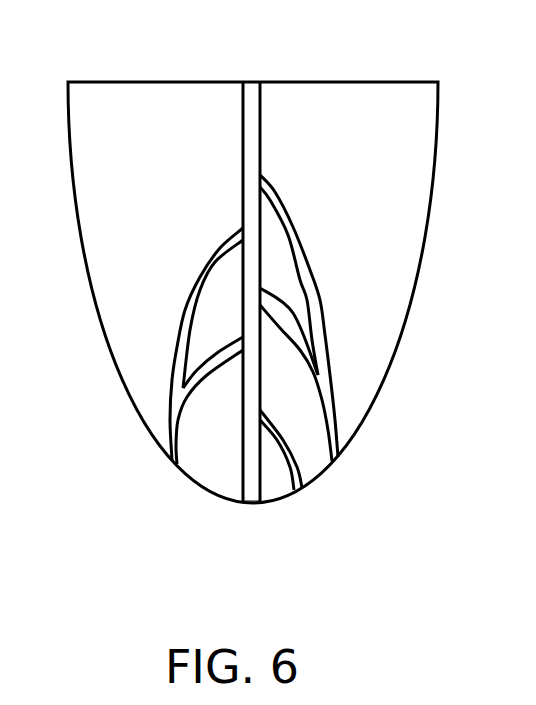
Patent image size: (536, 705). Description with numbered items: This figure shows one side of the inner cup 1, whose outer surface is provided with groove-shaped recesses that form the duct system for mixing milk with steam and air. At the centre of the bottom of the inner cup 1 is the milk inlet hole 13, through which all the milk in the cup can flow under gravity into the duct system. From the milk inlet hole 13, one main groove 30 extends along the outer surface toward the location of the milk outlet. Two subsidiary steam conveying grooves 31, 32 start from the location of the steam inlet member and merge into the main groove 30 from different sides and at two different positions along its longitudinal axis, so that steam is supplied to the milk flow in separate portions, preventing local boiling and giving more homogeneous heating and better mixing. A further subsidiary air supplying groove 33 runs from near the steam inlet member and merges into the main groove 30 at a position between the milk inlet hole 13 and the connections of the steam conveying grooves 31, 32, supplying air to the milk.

The inner cup 1 is at (361, 90).
The main groove 30 is at (248, 123).
The steam conveying groove 31 is at (330, 407).
The steam conveying groove 32 is at (173, 438).
The air supplying groove 33 is at (296, 474).
The milk inlet hole 13 is at (249, 505).